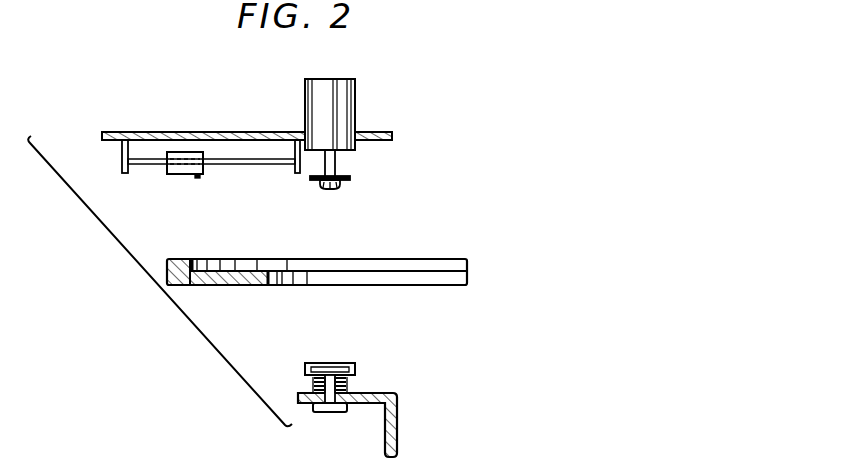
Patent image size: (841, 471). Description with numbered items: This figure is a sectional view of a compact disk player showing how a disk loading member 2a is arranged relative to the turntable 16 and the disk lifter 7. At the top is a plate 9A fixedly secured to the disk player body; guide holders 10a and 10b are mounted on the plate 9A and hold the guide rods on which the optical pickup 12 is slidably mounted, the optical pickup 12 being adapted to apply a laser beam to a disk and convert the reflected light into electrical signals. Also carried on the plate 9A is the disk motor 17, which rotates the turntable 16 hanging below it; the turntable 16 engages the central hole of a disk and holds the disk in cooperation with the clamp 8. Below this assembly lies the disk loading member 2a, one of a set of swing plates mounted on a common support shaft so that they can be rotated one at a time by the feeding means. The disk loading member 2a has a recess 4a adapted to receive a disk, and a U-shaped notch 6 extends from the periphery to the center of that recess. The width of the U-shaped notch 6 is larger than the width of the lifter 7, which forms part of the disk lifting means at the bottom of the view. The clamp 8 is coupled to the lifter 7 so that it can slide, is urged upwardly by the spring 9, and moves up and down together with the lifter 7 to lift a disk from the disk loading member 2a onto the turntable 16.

The plate 9A is at (188, 131).
The guide holder 10a is at (120, 165).
The guide holder 10b is at (291, 173).
The optical pickup 12 is at (177, 176).
The disk motor 17 is at (355, 103).
The turntable 16 is at (341, 185).
The disk loading member 2a is at (470, 273).
The recess 4a is at (242, 266).
The U-shaped notch 6 is at (298, 285).
The lifter 7 is at (397, 435).
The clamp 8 is at (355, 367).
The spring 9 is at (344, 383).